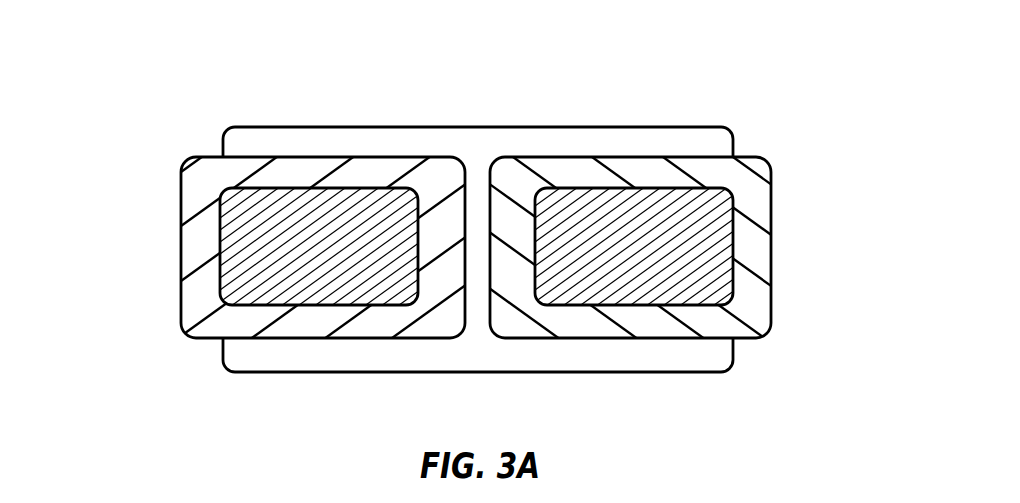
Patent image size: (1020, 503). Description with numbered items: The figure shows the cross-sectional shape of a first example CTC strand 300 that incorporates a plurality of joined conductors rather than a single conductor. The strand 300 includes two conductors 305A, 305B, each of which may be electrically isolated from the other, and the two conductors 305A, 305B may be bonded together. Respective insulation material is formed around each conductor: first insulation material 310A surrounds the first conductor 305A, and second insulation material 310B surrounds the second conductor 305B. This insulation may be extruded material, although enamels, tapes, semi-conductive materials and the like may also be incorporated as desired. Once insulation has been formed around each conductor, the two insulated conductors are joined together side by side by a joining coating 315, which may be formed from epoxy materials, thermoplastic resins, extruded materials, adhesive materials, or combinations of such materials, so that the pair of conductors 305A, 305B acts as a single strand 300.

The CTC strand 300 is at (842, 85).
The first conductor 305A is at (276, 273).
The second conductor 305B is at (708, 248).
The first insulation material 310A is at (257, 169).
The second insulation material 310B is at (736, 329).
The joining coating 315 is at (484, 154).